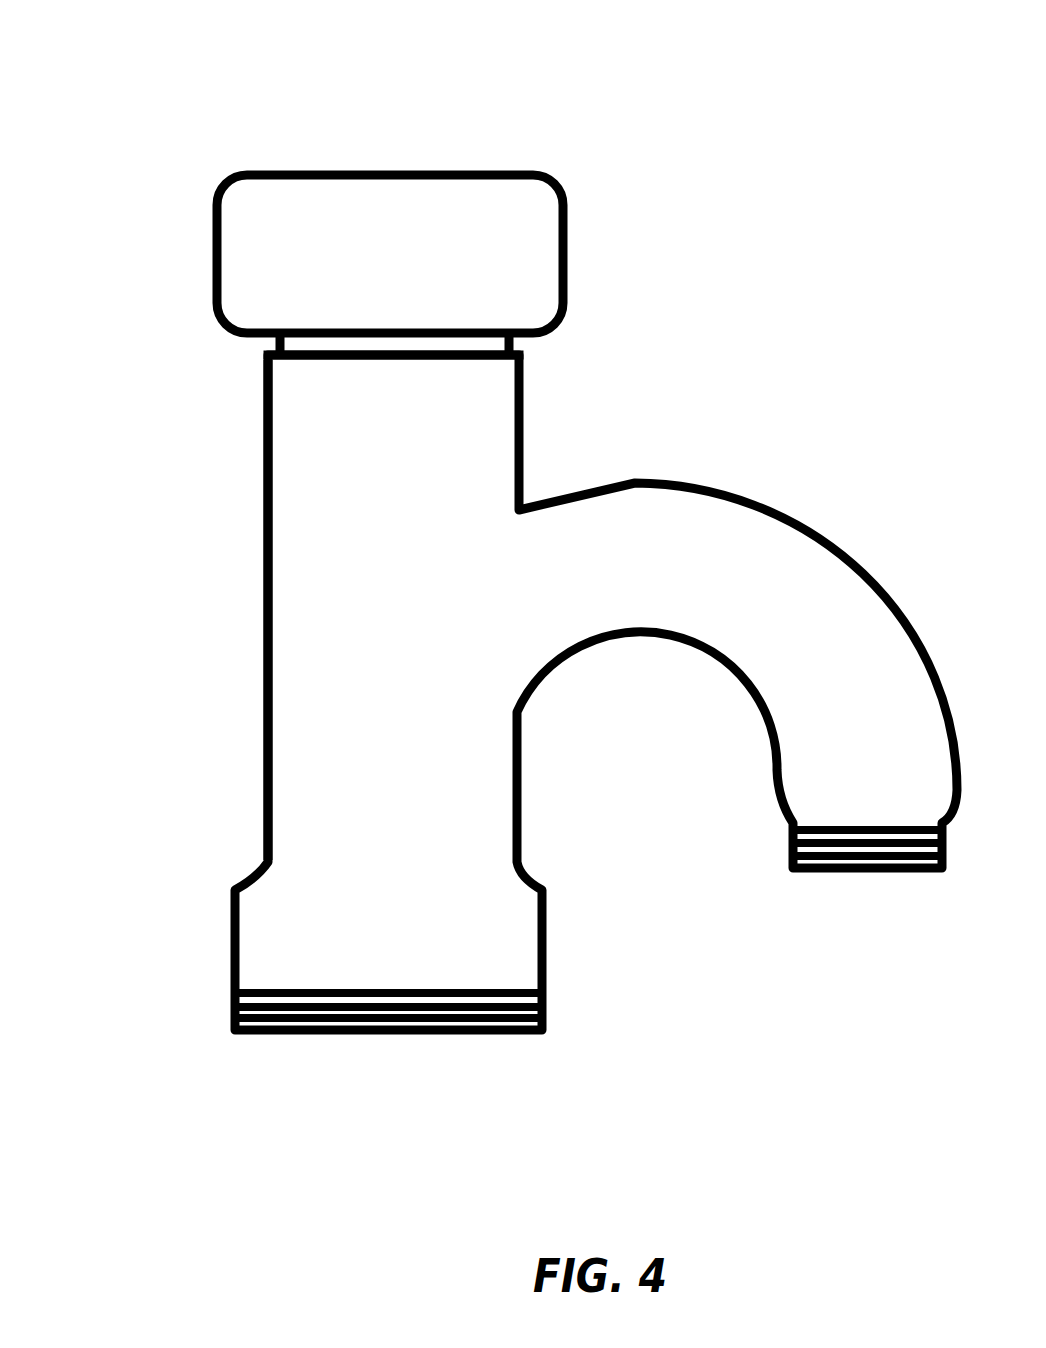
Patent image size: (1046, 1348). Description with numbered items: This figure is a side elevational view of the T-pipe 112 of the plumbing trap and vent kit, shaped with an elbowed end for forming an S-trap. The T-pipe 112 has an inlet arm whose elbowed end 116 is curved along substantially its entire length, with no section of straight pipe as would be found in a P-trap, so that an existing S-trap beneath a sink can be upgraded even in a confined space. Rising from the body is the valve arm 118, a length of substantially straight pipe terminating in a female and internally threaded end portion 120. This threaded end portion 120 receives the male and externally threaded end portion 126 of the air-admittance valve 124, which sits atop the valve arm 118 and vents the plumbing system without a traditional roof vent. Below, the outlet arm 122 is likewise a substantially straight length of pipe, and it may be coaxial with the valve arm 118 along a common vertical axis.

The T-pipe 112 is at (682, 384).
The elbowed end 116 is at (758, 895).
The valve arm 118 is at (238, 423).
The female and internally threaded end portion 120 is at (332, 390).
The outlet arm 122 is at (240, 826).
The air-admittance valve 124 is at (372, 138).
The male and externally threaded end portion 126 is at (434, 336).